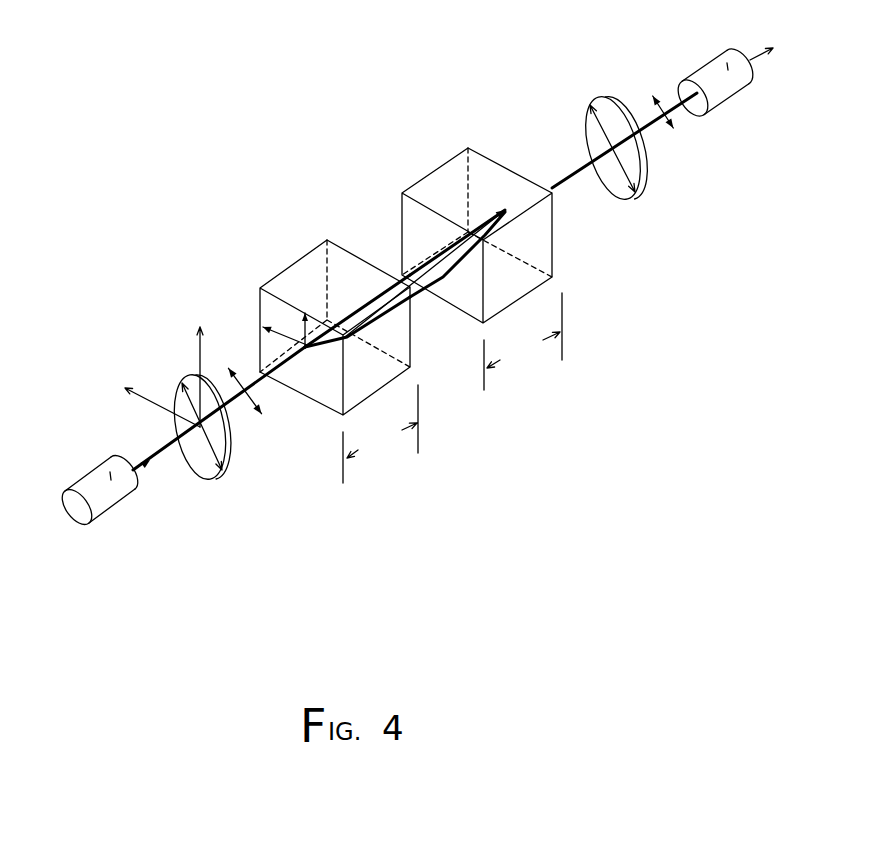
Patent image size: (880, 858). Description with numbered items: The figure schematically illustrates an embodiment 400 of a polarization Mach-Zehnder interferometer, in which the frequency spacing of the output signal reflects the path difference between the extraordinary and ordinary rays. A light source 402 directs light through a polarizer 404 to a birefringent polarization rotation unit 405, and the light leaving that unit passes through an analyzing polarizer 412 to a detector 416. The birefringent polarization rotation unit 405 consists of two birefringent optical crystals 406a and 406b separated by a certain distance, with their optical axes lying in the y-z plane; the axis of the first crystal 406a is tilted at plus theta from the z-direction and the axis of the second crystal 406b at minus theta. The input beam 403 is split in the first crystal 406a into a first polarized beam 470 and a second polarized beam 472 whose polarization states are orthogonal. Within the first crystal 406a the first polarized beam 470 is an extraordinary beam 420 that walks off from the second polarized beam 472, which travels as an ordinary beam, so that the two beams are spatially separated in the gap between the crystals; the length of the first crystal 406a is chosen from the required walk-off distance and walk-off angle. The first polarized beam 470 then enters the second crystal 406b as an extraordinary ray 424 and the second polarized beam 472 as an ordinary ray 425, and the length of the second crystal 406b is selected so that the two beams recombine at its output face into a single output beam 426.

The PMZI embodiment 400 is at (400, 275).
The light source 402 is at (102, 466).
The input beam 403 is at (230, 403).
The polarizer 404 is at (215, 477).
The birefringent polarization rotation unit 405 is at (259, 198).
The first crystal 406a is at (260, 287).
The second crystal 406b is at (403, 193).
The analyzing polarizer 412 is at (638, 190).
The detector 416 is at (704, 65).
The extraordinary beam 420 is at (329, 342).
The extraordinary ray 424 is at (465, 265).
The ordinary ray 425 is at (478, 225).
The output beam 426 is at (566, 179).
The first polarized beam 470 is at (411, 282).
The second polarized beam 472 is at (399, 277).